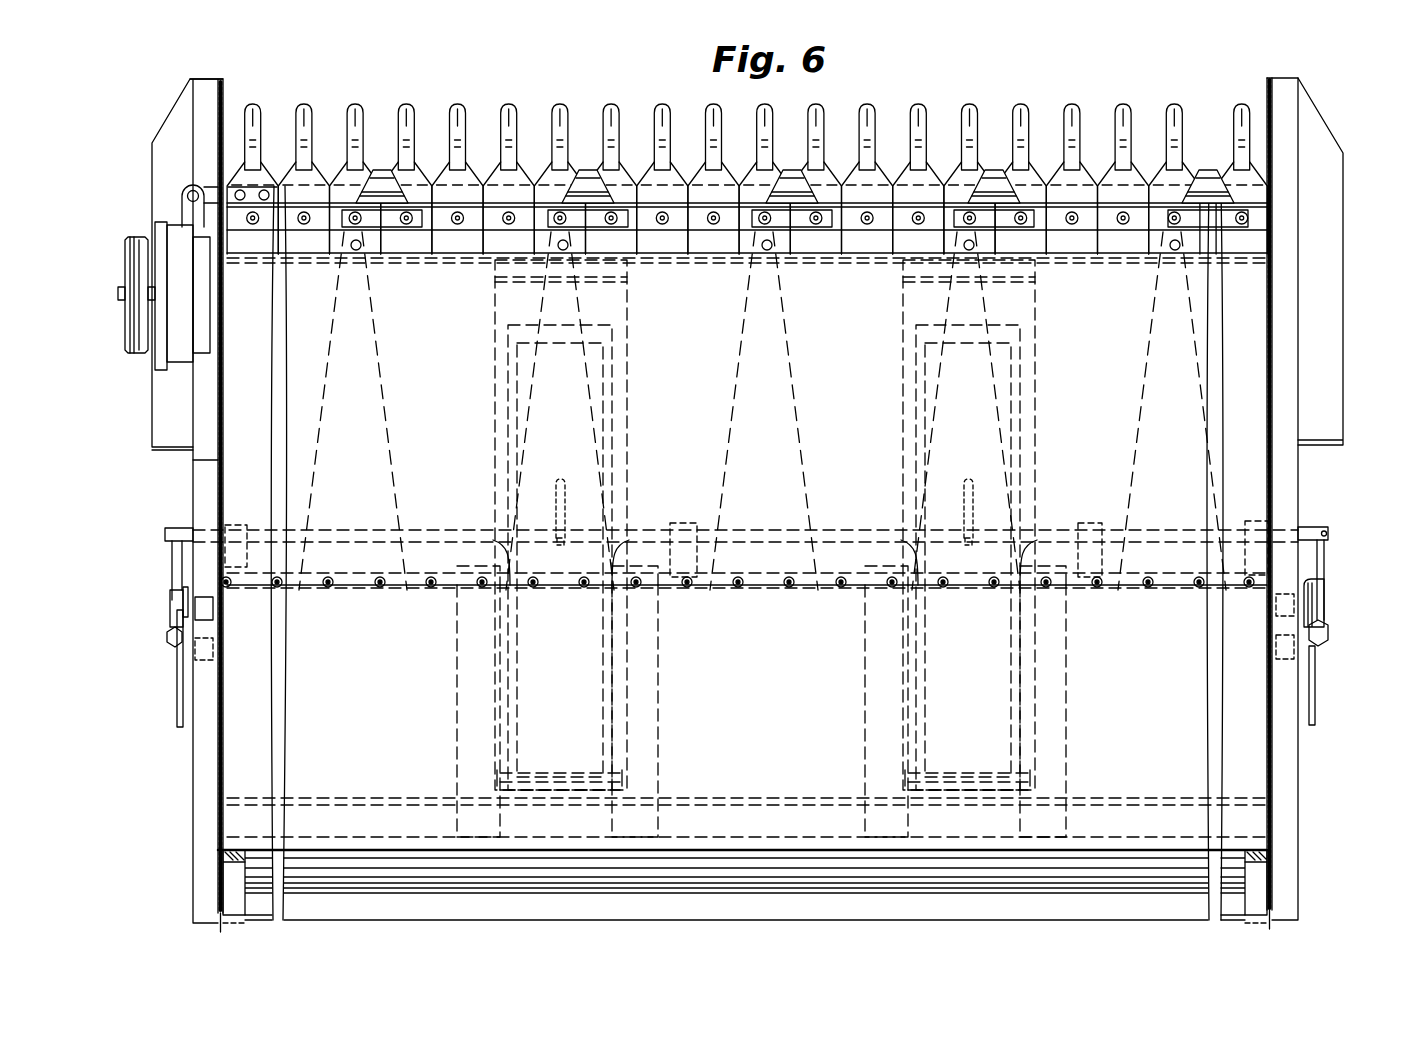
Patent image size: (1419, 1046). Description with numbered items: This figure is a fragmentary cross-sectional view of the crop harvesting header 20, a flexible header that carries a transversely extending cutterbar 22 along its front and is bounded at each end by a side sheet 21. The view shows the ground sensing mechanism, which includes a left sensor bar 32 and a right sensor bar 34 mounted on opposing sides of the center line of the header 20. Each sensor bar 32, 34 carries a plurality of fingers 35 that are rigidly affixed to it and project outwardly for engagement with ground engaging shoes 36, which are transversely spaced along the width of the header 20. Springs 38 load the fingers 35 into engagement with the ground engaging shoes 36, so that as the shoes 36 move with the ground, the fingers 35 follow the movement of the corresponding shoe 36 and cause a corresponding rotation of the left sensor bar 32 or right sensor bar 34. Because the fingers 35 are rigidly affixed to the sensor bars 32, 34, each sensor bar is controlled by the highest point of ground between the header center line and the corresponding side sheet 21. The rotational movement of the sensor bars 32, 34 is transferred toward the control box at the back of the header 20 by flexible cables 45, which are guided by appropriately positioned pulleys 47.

The crop harvesting header 20 is at (1340, 601).
The side sheet 21 is at (215, 755).
The cutterbar 22 is at (476, 158).
The left sensor bar 32 is at (187, 528).
The right sensor bar 34 is at (1312, 530).
The fingers 35 is at (561, 480).
The ground engaging shoes 36 is at (612, 403).
The springs 38 is at (168, 636).
The flexible cables 45 is at (177, 693).
The pulleys 47 is at (1318, 598).